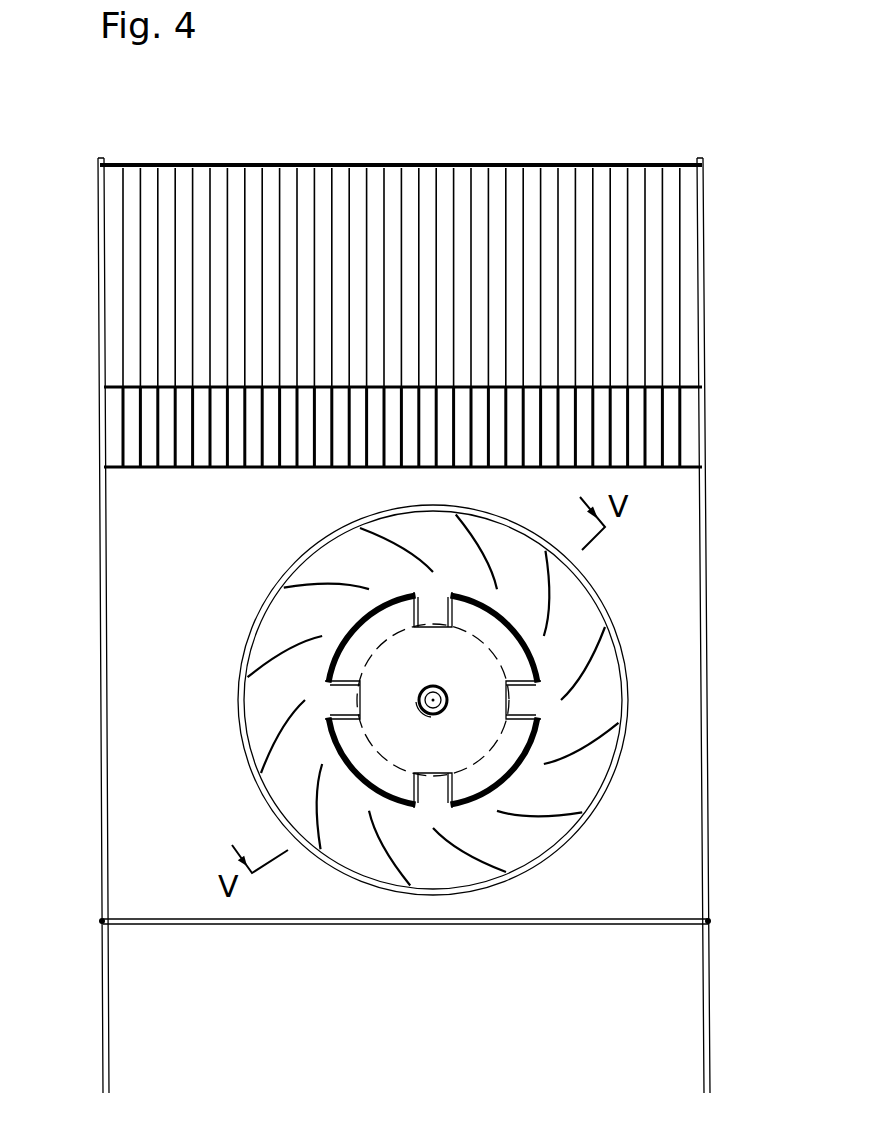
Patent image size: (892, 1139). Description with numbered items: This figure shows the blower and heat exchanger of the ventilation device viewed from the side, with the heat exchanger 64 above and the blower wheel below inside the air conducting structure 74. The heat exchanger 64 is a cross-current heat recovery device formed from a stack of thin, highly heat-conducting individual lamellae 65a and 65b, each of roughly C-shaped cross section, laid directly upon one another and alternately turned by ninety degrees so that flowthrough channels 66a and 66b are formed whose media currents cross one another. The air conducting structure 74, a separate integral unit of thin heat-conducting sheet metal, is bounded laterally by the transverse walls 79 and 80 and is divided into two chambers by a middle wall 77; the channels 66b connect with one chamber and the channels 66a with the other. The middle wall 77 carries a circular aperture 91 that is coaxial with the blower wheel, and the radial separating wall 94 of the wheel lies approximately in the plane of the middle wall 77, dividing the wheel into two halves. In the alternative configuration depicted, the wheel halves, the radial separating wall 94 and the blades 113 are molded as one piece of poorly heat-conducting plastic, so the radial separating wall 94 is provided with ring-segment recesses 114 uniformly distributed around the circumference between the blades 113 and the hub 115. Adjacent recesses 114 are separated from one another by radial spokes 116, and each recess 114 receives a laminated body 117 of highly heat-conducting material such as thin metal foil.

The heat exchanger 64 is at (657, 352).
The lamella 65a is at (201, 173).
The lamella 65b is at (558, 168).
The flowthrough channel 66a is at (170, 433).
The flowthrough channel 66b is at (357, 182).
The air conducting structure 74 is at (122, 563).
The middle wall 77 is at (130, 622).
The transverse wall 79 is at (100, 533).
The transverse wall 80 is at (705, 787).
The circular aperture 91 is at (621, 652).
The radial separating wall 94 is at (308, 683).
The blades 113 is at (315, 808).
The recess 114 is at (452, 710).
The hub 115 is at (548, 763).
The radial spoke 116 is at (532, 700).
The laminated body 117 is at (512, 632).